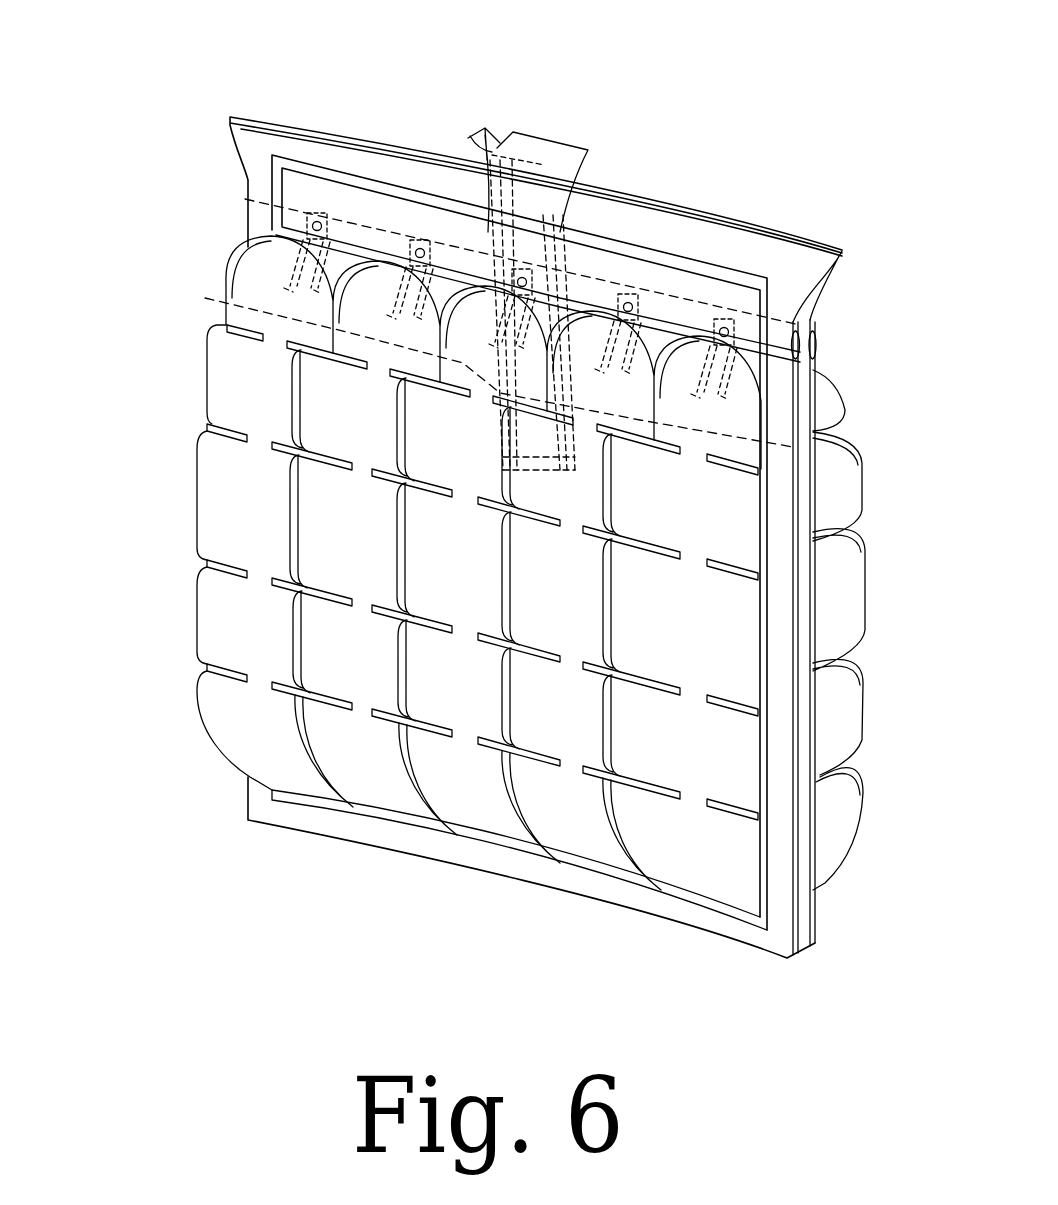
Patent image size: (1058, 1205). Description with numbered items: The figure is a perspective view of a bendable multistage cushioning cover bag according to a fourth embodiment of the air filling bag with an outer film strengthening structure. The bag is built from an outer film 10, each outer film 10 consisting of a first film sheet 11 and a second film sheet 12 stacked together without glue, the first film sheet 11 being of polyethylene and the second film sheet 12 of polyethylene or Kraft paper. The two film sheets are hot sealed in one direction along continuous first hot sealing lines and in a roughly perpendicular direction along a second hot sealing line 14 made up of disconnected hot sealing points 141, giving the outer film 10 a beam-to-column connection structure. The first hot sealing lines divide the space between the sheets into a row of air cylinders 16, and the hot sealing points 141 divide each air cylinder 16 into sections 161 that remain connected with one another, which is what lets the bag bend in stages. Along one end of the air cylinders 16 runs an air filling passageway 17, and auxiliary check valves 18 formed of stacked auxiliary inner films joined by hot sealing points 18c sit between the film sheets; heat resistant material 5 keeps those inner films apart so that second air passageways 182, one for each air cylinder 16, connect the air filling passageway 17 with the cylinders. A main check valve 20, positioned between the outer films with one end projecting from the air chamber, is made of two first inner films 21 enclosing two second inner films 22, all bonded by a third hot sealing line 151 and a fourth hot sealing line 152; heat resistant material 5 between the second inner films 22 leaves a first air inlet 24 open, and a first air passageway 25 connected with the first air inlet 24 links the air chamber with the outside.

The heat resistant material 5 is at (548, 242).
The outer film 10 is at (838, 250).
The first film sheet 11 is at (825, 292).
The second film sheet 12 is at (790, 236).
The second hot sealing line 14 is at (766, 573).
The air cylinder 16 is at (390, 792).
The air filling passageway 17 is at (810, 352).
The auxiliary check valve 18 is at (322, 218).
The hot sealing point 18c is at (630, 302).
The main check valve 20 is at (551, 260).
The first inner film 21 is at (583, 180).
The second inner film 22 is at (488, 137).
The first air inlet 24 is at (524, 210).
The first air passageway 25 is at (543, 447).
The hot sealing point 141 is at (218, 426).
The third hot sealing line 151 is at (262, 222).
The fourth hot sealing line 152 is at (318, 172).
The section 161 is at (218, 720).
The second air passageway 182 is at (297, 299).